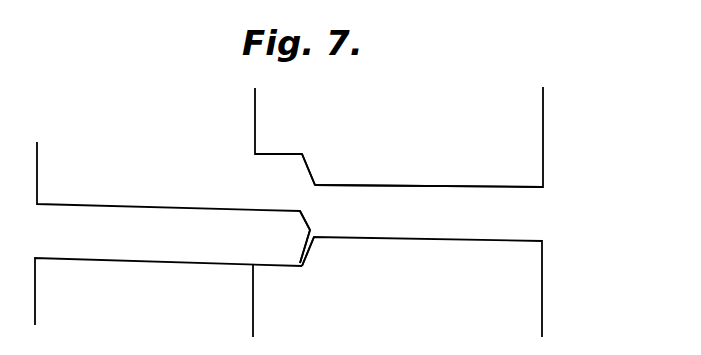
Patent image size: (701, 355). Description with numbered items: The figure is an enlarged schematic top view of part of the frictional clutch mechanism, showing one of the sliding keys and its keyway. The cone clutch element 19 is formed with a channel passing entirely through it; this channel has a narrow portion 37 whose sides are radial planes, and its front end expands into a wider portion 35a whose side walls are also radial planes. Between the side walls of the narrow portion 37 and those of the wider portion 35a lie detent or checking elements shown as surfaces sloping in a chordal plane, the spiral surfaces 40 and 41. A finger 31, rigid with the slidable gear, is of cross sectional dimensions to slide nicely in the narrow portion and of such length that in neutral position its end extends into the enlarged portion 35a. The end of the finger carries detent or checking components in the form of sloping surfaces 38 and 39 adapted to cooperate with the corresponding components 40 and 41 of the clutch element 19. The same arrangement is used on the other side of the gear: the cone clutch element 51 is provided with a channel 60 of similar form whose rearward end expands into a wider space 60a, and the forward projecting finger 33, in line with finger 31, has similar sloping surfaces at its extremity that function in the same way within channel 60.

The cone clutch element 19 is at (447, 212).
The cone clutch element 51 is at (522, 119).
The finger 31 is at (172, 233).
The finger 33 is at (158, 245).
The spiral surface 40 is at (307, 168).
The wider portion 35a is at (239, 162).
The wider space 60a is at (284, 173).
The narrow portion 37 is at (429, 181).
The channel 60 is at (450, 208).
The sloping surface 39 is at (304, 252).
The sloping surface 38 is at (312, 232).
The spiral surface 41 is at (316, 249).